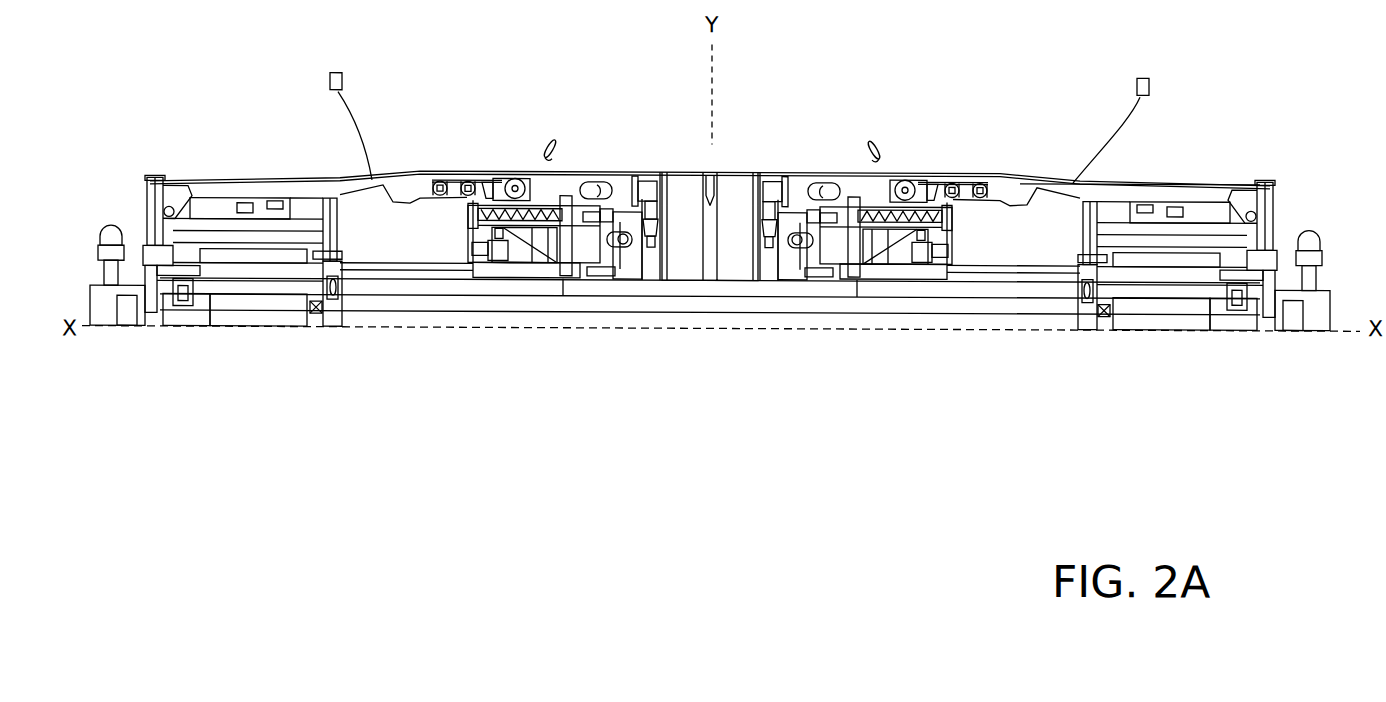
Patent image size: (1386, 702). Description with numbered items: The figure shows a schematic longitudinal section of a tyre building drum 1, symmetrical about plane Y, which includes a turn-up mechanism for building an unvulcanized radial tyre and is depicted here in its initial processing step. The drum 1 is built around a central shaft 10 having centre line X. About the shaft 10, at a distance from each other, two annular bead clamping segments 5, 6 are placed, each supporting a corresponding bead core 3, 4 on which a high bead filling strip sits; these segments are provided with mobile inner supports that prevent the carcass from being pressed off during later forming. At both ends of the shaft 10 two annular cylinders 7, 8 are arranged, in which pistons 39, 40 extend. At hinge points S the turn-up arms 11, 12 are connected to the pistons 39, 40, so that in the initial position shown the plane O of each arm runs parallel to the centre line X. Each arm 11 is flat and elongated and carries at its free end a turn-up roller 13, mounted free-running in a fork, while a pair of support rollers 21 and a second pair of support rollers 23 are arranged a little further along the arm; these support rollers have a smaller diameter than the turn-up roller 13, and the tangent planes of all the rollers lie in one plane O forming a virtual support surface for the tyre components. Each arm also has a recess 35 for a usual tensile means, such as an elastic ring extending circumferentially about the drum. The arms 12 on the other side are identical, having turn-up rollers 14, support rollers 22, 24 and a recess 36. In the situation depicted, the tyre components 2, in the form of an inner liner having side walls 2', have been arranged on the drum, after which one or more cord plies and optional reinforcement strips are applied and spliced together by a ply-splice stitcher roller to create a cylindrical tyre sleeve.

The tyre building drum 1 is at (690, 171).
The tyre components 2 is at (457, 154).
The side walls 2' is at (953, 152).
The bead core 3 is at (553, 145).
The bead core 4 is at (870, 137).
The annular bead clamping segment 5 is at (555, 175).
The annular bead clamping segment 6 is at (870, 183).
The annular cylinder 7 is at (252, 216).
The annular cylinder 8 is at (1220, 188).
The central shaft 10 is at (735, 318).
The turn-up arm 11 is at (330, 190).
The turn-up arm 12 is at (1020, 183).
The turn-up roller 13 is at (510, 178).
The turn-up roller 14 is at (907, 180).
The support rollers 21 is at (475, 172).
The support rollers 22 is at (947, 180).
The support rollers 23 is at (425, 180).
The support rollers 24 is at (983, 180).
The recess 35 is at (406, 187).
The recess 36 is at (1070, 183).
The piston 39 is at (306, 230).
The piston 40 is at (1130, 185).
The hinge point S is at (147, 200).